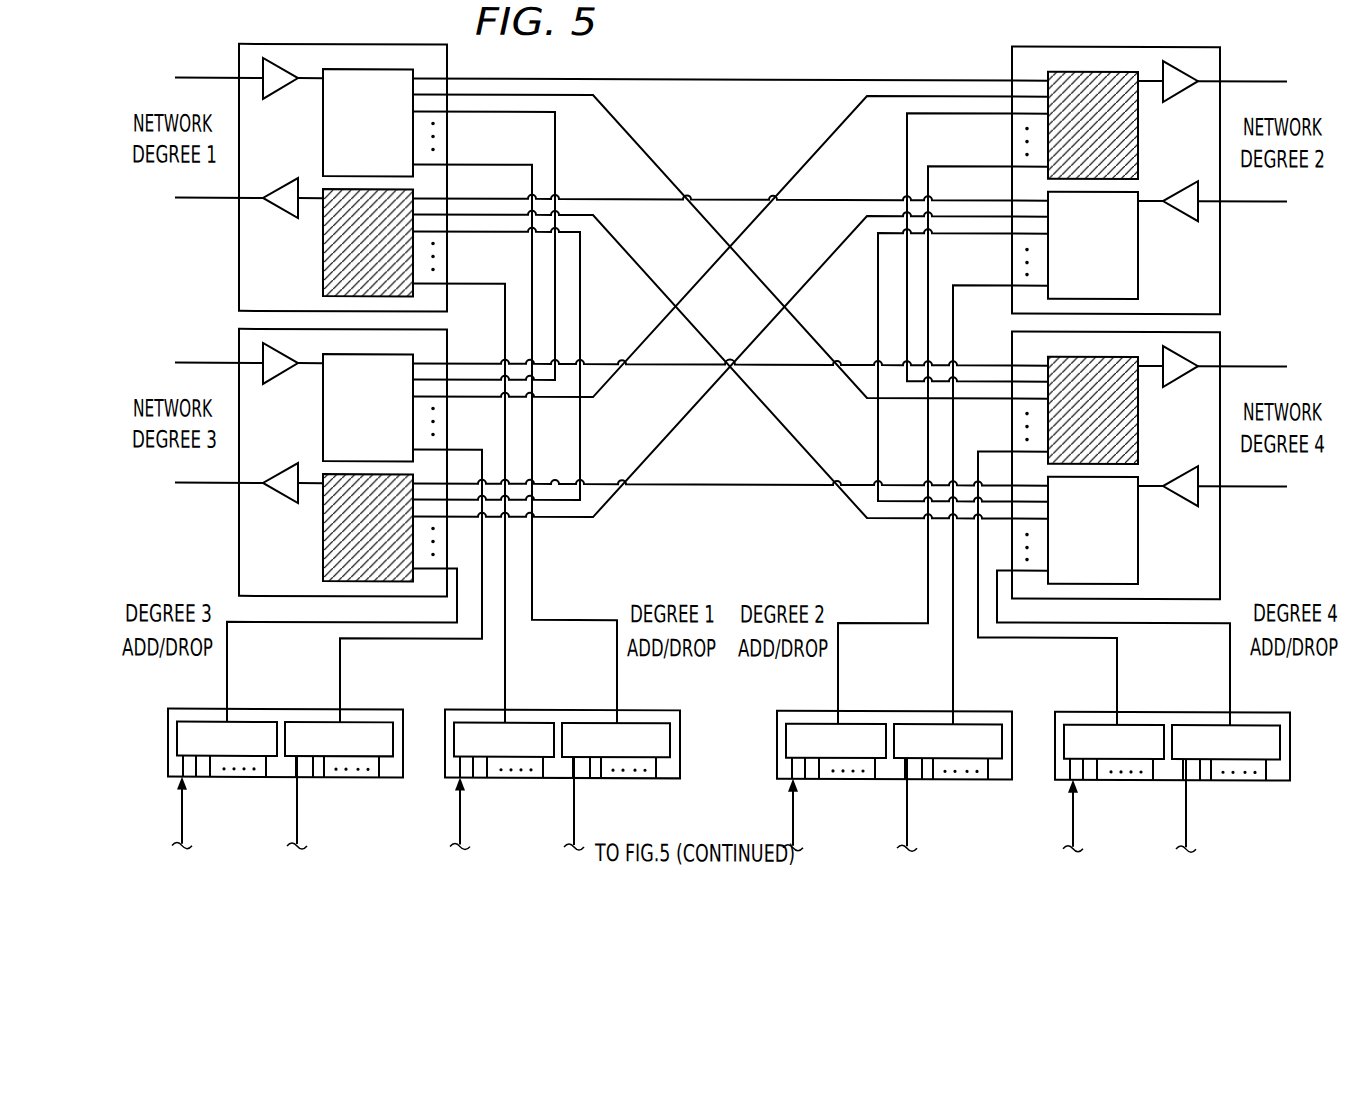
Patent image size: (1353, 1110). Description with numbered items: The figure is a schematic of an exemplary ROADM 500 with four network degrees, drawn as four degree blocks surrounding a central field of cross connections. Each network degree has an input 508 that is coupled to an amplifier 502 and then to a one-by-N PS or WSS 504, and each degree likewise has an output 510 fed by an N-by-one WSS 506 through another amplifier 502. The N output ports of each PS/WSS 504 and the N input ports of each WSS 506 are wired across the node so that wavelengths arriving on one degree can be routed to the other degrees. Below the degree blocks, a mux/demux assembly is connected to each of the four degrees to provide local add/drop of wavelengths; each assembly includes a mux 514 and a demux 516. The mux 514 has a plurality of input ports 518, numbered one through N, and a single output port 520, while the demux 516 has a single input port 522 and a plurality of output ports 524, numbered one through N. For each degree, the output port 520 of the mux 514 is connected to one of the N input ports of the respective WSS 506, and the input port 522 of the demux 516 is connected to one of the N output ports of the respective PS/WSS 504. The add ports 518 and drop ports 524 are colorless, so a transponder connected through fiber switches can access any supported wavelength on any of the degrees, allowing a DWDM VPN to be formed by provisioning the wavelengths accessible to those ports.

The ROADM 500 is at (770, 60).
The amplifier 502 is at (263, 97).
The 1×N PS or WSS 504 is at (323, 122).
The N×1 WSS 506 is at (323, 265).
The input 508 is at (1268, 507).
The output 510 is at (1268, 58).
The mux 514 is at (241, 720).
The demux 516 is at (355, 720).
The input ports 518 is at (1102, 810).
The output port 520 is at (223, 720).
The input port 522 is at (333, 720).
The output ports 524 is at (308, 779).